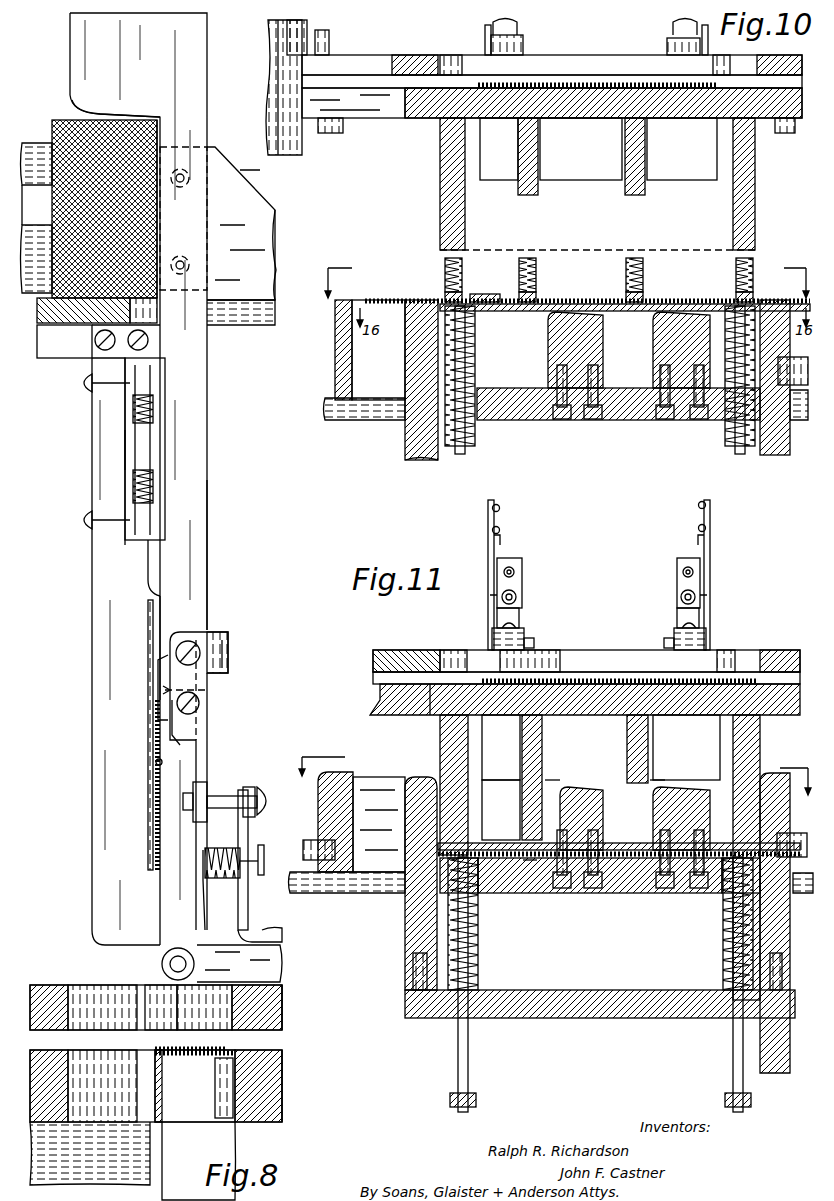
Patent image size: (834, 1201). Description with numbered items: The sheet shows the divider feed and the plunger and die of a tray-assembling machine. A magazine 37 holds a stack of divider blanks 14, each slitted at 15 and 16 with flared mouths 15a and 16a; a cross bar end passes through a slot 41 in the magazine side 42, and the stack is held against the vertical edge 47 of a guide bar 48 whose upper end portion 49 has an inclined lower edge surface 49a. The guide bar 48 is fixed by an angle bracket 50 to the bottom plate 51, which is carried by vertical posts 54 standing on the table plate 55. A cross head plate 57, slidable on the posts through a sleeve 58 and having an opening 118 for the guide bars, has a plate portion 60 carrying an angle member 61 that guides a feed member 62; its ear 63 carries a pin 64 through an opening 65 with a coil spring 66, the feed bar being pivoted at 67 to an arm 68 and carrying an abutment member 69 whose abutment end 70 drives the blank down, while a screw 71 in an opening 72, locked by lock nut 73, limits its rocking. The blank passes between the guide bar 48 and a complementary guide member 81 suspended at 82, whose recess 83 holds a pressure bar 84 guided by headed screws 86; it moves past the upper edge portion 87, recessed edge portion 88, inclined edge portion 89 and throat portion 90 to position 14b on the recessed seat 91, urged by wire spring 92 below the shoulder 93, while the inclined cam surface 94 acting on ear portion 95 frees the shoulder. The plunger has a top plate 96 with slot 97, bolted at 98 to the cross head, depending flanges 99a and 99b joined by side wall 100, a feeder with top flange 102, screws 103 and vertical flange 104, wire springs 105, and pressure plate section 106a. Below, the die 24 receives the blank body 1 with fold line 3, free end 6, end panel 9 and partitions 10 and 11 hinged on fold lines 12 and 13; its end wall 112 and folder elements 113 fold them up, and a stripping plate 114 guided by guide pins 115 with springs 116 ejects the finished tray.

In FIG. 10, the main body member 1 is at (663, 304).
In FIG. 11, the main body member 1 is at (497, 895).
In FIG. 11, the fold line 3 is at (438, 856).
In FIG. 10, the free end 6 is at (770, 300).
In FIG. 11, the free end 6 is at (768, 865).
In FIG. 10, the marginal end panel 9 is at (402, 298).
In FIG. 11, the marginal end panel 9 is at (428, 790).
In FIG. 11, the transverse partition panel 10 is at (552, 785).
In FIG. 11, the transverse partition panel 11 is at (668, 785).
In FIG. 10, the fold line 12 is at (557, 281).
In FIG. 11, the fold line 12 is at (531, 868).
In FIG. 11, the fold line 13 is at (548, 771).
In FIG. 8, the divider 14 is at (75, 119).
In FIG. 10, the divider 14 is at (568, 250).
In FIG. 11, the divider 14 is at (503, 790).
In FIG. 8, the divider blank position 14b is at (148, 818).
In FIG. 10, the slit 15 is at (538, 251).
In FIG. 10, the flared mouth 15a is at (562, 258).
In FIG. 10, the slit 16 is at (642, 251).
In FIG. 10, the flared mouth 16a is at (678, 258).
In FIG. 10, the die 24 is at (405, 445).
In FIG. 11, the die 24 is at (373, 790).
In FIG. 8, the magazine 37 is at (36, 152).
In FIG. 8, the slot 41 is at (30, 224).
In FIG. 8, the magazine side 42 is at (37, 259).
In FIG. 8, the vertical edge 47 is at (150, 214).
In FIG. 8, the guide bar 48 is at (207, 532).
In FIG. 8, the upper end portion 49 is at (193, 45).
In FIG. 8, the inclined lower edge surface 49a is at (78, 117).
In FIG. 8, the angle bracket 50 is at (256, 245).
In FIG. 8, the bottom plate 51 is at (236, 315).
In FIG. 10, the vertical post 54 is at (285, 150).
In FIG. 10, the table plate 55 is at (335, 406).
In FIG. 11, the table plate 55 is at (340, 885).
In FIG. 8, the cross head plate 57 is at (55, 986).
In FIG. 10, the cross head plate 57 is at (380, 63).
In FIG. 11, the cross head plate 57 is at (430, 650).
In FIG. 10, the sleeve 58 is at (306, 26).
In FIG. 8, the plate portion 60 is at (280, 998).
In FIG. 8, the angle member 61 is at (248, 898).
In FIG. 10, the angle member 61 is at (528, 28).
In FIG. 11, the angle member 61 is at (520, 616).
In FIG. 8, the feed member 62 is at (200, 740).
In FIG. 10, the feed member 62 is at (486, 45).
In FIG. 11, the feed member 62 is at (487, 548).
In FIG. 8, the ear 63 is at (206, 783).
In FIG. 11, the ear 63 is at (522, 580).
In FIG. 8, the pin 64 is at (263, 864).
In FIG. 11, the pin 64 is at (517, 597).
In FIG. 8, the opening 65 is at (245, 858).
In FIG. 8, the coil spring 66 is at (205, 873).
In FIG. 11, the coil spring 66 is at (505, 597).
In FIG. 8, the pivot 67 is at (162, 967).
In FIG. 11, the pivot 67 is at (492, 640).
In FIG. 8, the arm 68 is at (268, 955).
In FIG. 11, the arm 68 is at (525, 634).
In FIG. 8, the abutment member 69 is at (165, 668).
In FIG. 11, the abutment member 69 is at (493, 528).
In FIG. 8, the abutment end 70 is at (174, 735).
In FIG. 11, the abutment end 70 is at (490, 541).
In FIG. 8, the screw 71 is at (249, 787).
In FIG. 11, the screw 71 is at (510, 566).
In FIG. 8, the opening 72 is at (266, 787).
In FIG. 8, the lock nut 73 is at (186, 793).
In FIG. 8, the complementary guide member 81 is at (92, 645).
In FIG. 8, the suspension 82 is at (96, 341).
In FIG. 8, the recess 83 is at (125, 451).
In FIG. 8, the pressure bar 84 is at (150, 446).
In FIG. 8, the headed screw 86 is at (78, 386).
In FIG. 8, the upper edge portion 87 is at (163, 262).
In FIG. 8, the recessed edge portion 88 is at (162, 351).
In FIG. 8, the inclined edge portion 89 is at (157, 561).
In FIG. 8, the throat portion 90 is at (156, 613).
In FIG. 8, the recessed seat 91 is at (155, 762).
In FIG. 8, the wire spring 92 is at (154, 729).
In FIG. 8, the shoulder 93 is at (162, 690).
In FIG. 8, the inclined cam surface 94 is at (203, 633).
In FIG. 8, the ear portion 95 is at (229, 651).
In FIG. 8, the top plate 96 is at (282, 1090).
In FIG. 10, the top plate 96 is at (388, 120).
In FIG. 11, the top plate 96 is at (372, 702).
In FIG. 8, the slot 97 is at (137, 1081).
In FIG. 10, the slot 97 is at (425, 121).
In FIG. 11, the slot 97 is at (432, 717).
In FIG. 10, the bolt 98 is at (332, 134).
In FIG. 8, the depending flange 99a is at (90, 1153).
In FIG. 10, the depending flange 99a is at (452, 178).
In FIG. 11, the depending flange 99a is at (630, 765).
In FIG. 8, the depending flange 99b is at (199, 1161).
In FIG. 10, the side wall 100 is at (476, 168).
In FIG. 11, the side wall 100 is at (478, 757).
In FIG. 8, the horizontal top flange 102 is at (195, 1047).
In FIG. 10, the horizontal top flange 102 is at (607, 82).
In FIG. 11, the horizontal top flange 102 is at (578, 684).
In FIG. 11, the screw 103 is at (480, 749).
In FIG. 8, the vertical flange 104 is at (180, 1108).
In FIG. 10, the vertical flange 104 is at (590, 163).
In FIG. 11, the vertical flange 104 is at (700, 745).
In FIG. 11, the wire spring 105 is at (625, 737).
In FIG. 10, the pressure plate section 106a is at (492, 286).
In FIG. 11, the pressure plate section 106a is at (605, 893).
In FIG. 10, the end wall 112 is at (428, 300).
In FIG. 11, the end wall 112 is at (404, 828).
In FIG. 10, the folder element 113 is at (588, 352).
In FIG. 11, the folder element 113 is at (570, 790).
In FIG. 10, the stripping plate 114 is at (482, 386).
In FIG. 11, the stripping plate 114 is at (625, 893).
In FIG. 10, the guide pin 115 is at (465, 447).
In FIG. 11, the guide pin 115 is at (468, 965).
In FIG. 8, the spring 116 is at (93, 990).
In FIG. 10, the spring 116 is at (477, 380).
In FIG. 11, the spring 116 is at (478, 950).
In FIG. 10, the opening 118 is at (548, 62).
In FIG. 11, the opening 118 is at (572, 660).